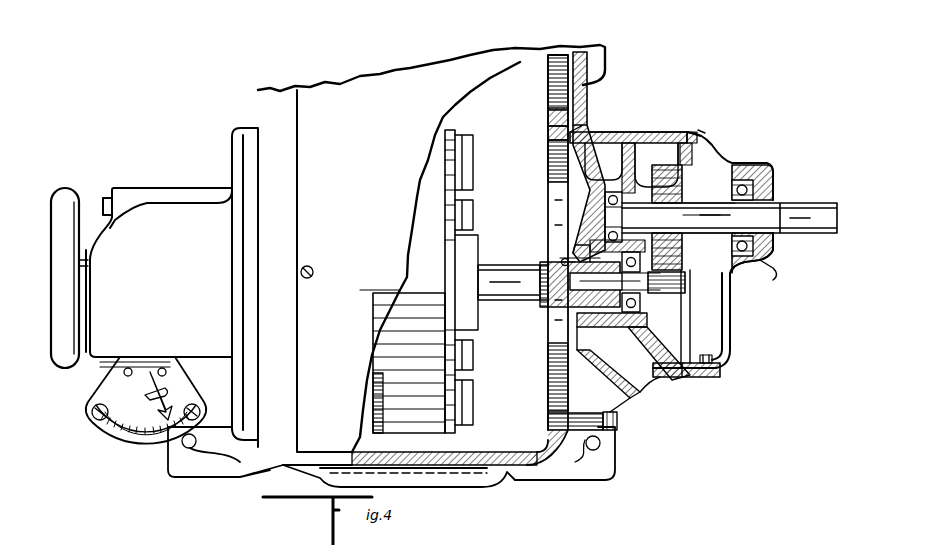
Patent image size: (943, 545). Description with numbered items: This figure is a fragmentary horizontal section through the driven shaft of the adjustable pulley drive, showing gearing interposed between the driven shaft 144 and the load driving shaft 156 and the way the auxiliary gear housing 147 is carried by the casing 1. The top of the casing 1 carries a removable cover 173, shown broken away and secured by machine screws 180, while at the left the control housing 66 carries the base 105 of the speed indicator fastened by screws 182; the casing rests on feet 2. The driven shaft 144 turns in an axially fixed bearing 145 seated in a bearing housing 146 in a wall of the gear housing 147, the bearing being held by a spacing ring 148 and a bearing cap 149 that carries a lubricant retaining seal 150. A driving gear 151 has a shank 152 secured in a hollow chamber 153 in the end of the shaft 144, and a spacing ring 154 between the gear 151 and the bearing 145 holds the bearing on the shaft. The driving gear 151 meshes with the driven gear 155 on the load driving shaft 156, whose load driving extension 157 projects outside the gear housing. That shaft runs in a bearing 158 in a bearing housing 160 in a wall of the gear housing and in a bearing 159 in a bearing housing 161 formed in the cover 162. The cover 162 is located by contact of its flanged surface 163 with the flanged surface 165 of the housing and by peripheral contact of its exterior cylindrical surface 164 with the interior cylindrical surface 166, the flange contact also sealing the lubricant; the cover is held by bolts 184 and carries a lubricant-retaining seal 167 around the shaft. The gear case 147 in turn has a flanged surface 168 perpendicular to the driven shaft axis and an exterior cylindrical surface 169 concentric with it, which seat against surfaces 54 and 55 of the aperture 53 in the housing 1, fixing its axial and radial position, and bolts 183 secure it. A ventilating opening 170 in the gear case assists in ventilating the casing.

The casing 1 is at (535, 478).
The base feet 2 is at (185, 468).
The aperture 53 is at (547, 174).
The surface of aperture 54 is at (547, 143).
The surface of aperture 55 is at (547, 123).
The control housing 66 is at (184, 266).
The base 105 is at (113, 386).
The driven shaft 144 is at (497, 262).
The axially fixed bearing 145 is at (645, 320).
The bearing housing 146 is at (583, 240).
The auxiliary gear housing 147 is at (641, 130).
The spacing ring 148 is at (580, 248).
The bearing cap 149 is at (563, 250).
The lubricant retaining seal 150 is at (560, 253).
The driving gear 151 is at (686, 287).
The shank 152 is at (560, 309).
The hollow chamber 153 is at (543, 307).
The spacing ring 154 is at (641, 300).
The driven gear 155 is at (683, 263).
The load driving shaft 156 is at (703, 202).
The load driving extension 157 is at (811, 202).
The bearing 158 is at (596, 187).
The bearing 159 is at (760, 163).
The bearing housing 160 is at (613, 193).
The bearing housing 161 is at (734, 165).
The cover 162 is at (723, 147).
The flanged surface 163 is at (698, 132).
The exterior cylindrical surface 164 is at (692, 152).
The flanged surface 165 is at (692, 131).
The interior cylindrical surface 166 is at (687, 132).
The lubricant-retaining seal 167 is at (776, 252).
The flanged surface 168 is at (603, 131).
The exterior cylindrical surface 169 is at (590, 131).
The ventilating opening 170 is at (638, 384).
The removable cover 173 is at (375, 83).
The machine screws 180 is at (313, 270).
The screws 182 is at (162, 368).
The bolts 183 is at (617, 430).
The bolts 184 is at (713, 360).